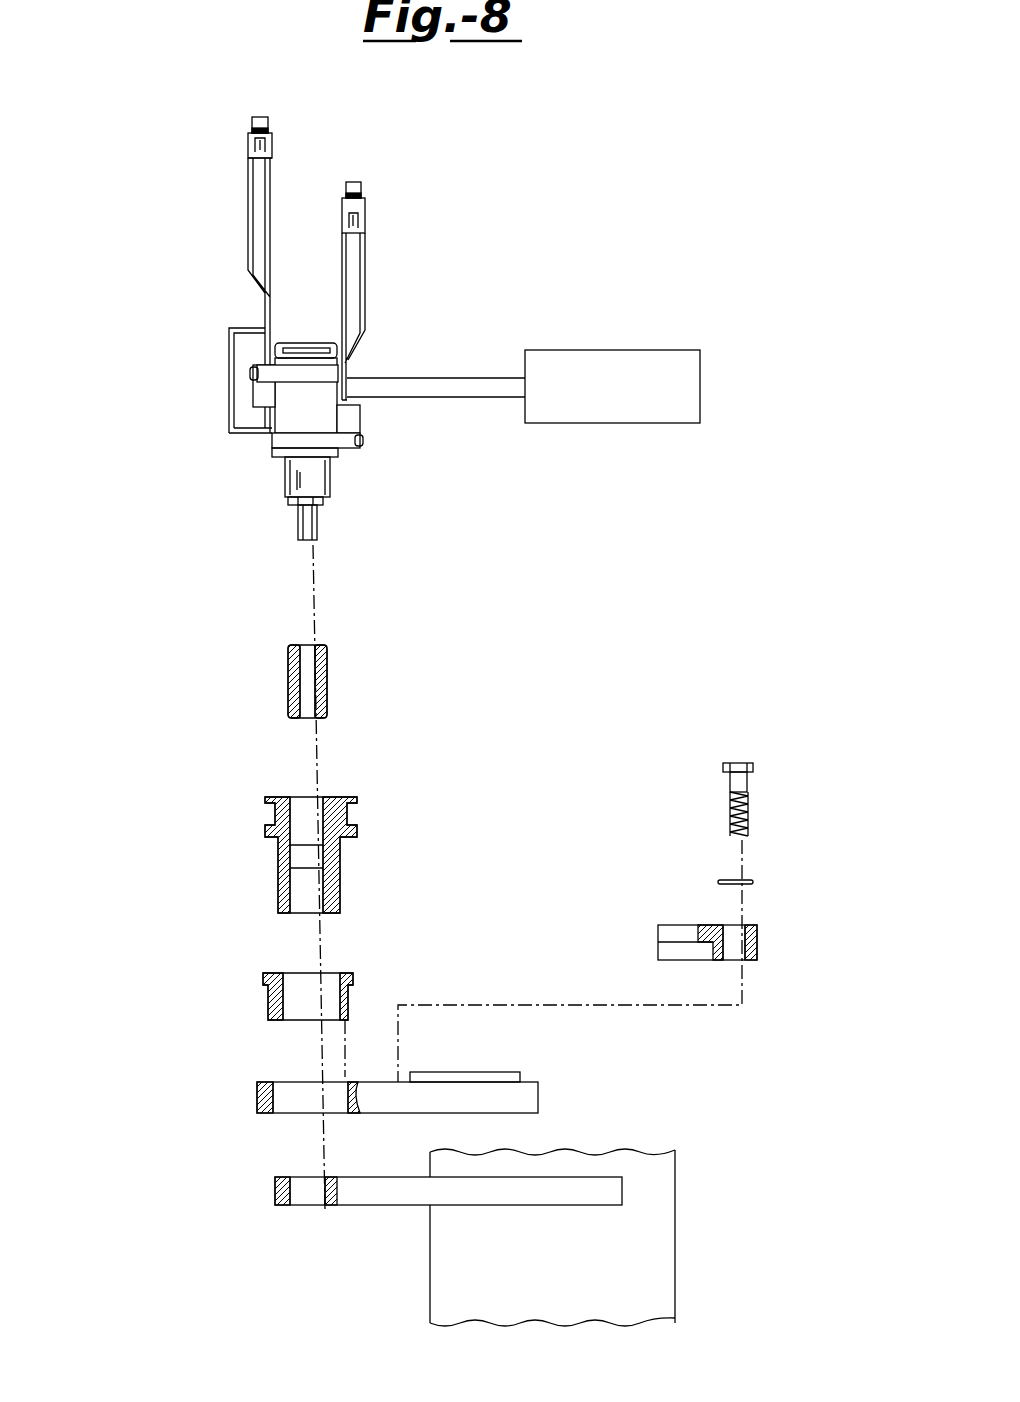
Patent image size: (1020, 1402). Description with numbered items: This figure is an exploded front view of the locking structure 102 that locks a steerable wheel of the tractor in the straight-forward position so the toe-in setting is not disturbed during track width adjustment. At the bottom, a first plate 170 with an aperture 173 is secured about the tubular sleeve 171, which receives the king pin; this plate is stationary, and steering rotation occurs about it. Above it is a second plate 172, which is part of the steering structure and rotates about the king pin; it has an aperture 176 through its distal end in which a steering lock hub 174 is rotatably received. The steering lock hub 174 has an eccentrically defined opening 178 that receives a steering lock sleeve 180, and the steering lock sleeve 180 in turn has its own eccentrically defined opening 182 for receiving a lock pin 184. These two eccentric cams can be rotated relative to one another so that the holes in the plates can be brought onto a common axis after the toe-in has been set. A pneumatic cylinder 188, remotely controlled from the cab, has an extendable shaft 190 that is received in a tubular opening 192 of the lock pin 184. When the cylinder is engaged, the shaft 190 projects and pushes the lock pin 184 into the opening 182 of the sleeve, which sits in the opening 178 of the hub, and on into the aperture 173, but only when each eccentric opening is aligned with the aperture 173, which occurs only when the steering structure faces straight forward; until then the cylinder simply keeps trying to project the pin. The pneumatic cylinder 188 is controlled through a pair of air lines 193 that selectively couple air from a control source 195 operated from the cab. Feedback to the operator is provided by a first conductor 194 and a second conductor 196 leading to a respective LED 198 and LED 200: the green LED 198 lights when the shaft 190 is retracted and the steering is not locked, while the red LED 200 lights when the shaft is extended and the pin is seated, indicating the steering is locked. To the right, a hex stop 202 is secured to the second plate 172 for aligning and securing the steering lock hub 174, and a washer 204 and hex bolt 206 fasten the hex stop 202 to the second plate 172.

The locking structure 102 is at (157, 282).
The LED 200 is at (250, 158).
The second conductor 196 is at (272, 217).
The LED 198 is at (363, 217).
The first conductor 194 is at (367, 297).
The air lines 193 is at (440, 393).
The control source 195 is at (630, 350).
The pneumatic cylinder 188 is at (223, 397).
The extendable shaft 190 is at (315, 527).
The lock pin 184 is at (288, 688).
The tubular opening 192 is at (303, 655).
The eccentrically defined opening 182 is at (293, 807).
The steering lock sleeve 180 is at (278, 872).
The steering lock hub 174 is at (268, 1005).
The eccentrically defined opening 178 is at (285, 980).
The second plate 172 is at (257, 1103).
The aperture 176 is at (272, 1090).
The first plate 170 is at (275, 1193).
The aperture 173 is at (298, 1177).
The tubular sleeve 171 is at (675, 1218).
The hex bolt 206 is at (755, 762).
The washer 204 is at (752, 882).
The hex stop 202 is at (757, 938).